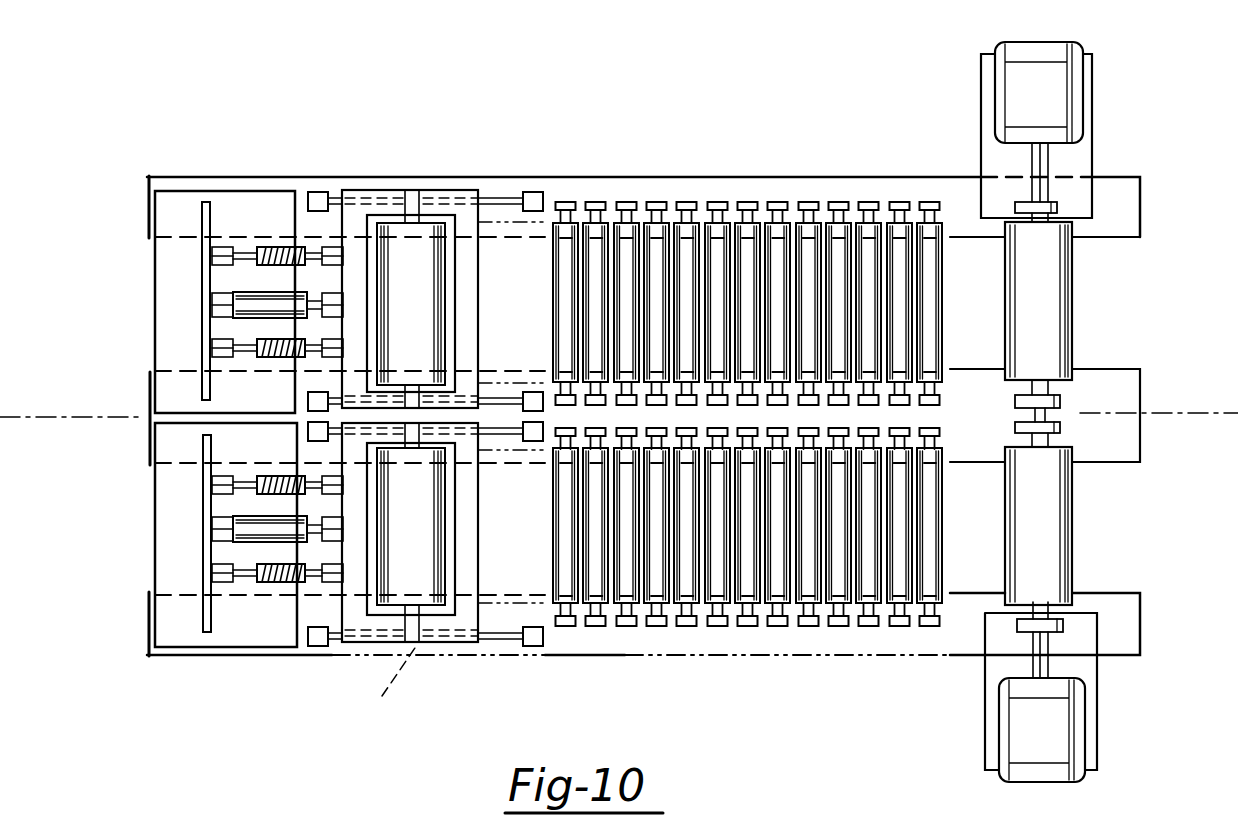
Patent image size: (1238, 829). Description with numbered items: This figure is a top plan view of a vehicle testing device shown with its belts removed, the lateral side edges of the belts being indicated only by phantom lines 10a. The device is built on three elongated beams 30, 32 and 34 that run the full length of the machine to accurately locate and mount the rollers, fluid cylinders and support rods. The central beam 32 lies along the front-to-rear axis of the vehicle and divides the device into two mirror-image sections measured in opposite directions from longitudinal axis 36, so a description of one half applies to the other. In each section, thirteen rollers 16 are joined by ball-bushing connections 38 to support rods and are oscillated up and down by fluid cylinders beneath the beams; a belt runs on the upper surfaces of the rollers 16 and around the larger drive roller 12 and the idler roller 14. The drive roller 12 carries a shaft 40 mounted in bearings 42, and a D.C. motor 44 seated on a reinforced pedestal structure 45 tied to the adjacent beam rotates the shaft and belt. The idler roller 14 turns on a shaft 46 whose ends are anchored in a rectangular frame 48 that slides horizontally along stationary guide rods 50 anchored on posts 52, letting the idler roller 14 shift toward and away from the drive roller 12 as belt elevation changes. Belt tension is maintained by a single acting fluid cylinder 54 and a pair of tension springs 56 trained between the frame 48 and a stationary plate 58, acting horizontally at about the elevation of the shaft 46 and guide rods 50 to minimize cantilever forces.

The phantom lines 10a is at (498, 220).
The drive roller 12 is at (1073, 296).
The idler roller 14 is at (442, 311).
The rollers 16 is at (560, 261).
The elongated beam 30 is at (209, 657).
The elongated beam 32 is at (148, 450).
The elongated beam 34 is at (197, 177).
The longitudinal axis 36 is at (56, 417).
The ball-bushing connections 38 is at (742, 202).
The shaft 40 is at (1050, 444).
The bearings 42 is at (1016, 428).
The D.C. motor 44 is at (1078, 83).
The pedestal structure 45 is at (1092, 119).
The shaft 46 is at (386, 685).
The rectangular frame 48 is at (470, 508).
The guide rods 50 is at (338, 436).
The posts 52 is at (533, 443).
The single acting fluid cylinder 54 is at (255, 543).
The tension springs 56 is at (259, 492).
The stationary plate 58 is at (200, 610).